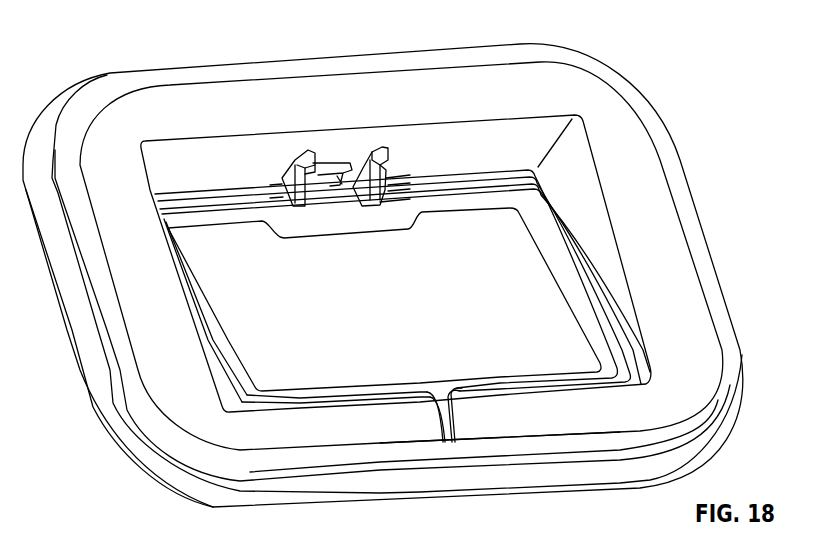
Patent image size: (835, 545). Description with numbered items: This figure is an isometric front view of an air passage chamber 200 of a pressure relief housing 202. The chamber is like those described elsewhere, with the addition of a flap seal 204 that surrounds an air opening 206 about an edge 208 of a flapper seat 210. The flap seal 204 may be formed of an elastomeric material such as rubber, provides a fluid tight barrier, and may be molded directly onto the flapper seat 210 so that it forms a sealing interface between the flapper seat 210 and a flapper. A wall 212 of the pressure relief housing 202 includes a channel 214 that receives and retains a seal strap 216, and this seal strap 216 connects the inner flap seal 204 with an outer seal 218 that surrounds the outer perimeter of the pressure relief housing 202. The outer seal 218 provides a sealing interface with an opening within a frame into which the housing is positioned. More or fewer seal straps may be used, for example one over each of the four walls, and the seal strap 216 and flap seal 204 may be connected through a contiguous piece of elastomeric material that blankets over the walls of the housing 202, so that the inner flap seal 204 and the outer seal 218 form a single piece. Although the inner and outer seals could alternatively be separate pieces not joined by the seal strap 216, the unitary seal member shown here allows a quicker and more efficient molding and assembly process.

The air passage chamber 200 is at (253, 267).
The pressure relief housing 202 is at (404, 44).
The flap seal 204 is at (555, 285).
The air opening 206 is at (297, 278).
The edge 208 is at (535, 197).
The flapper seat 210 is at (636, 350).
The wall 212 is at (622, 412).
The channel 214 is at (447, 432).
The seal strap 216 is at (444, 417).
The outer seal 218 is at (277, 497).